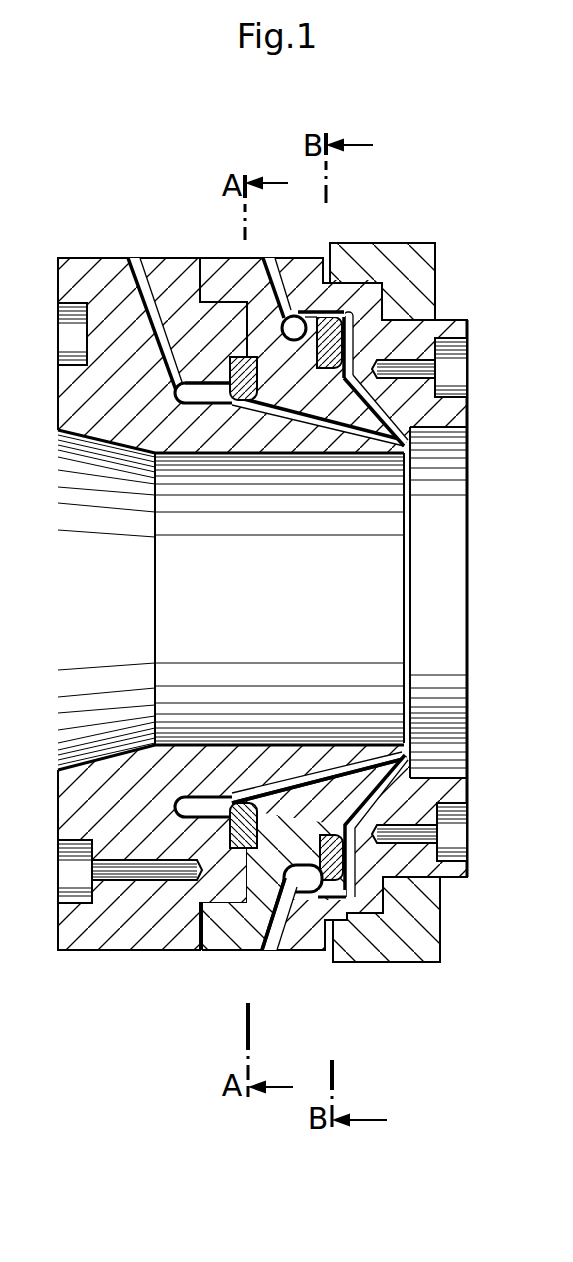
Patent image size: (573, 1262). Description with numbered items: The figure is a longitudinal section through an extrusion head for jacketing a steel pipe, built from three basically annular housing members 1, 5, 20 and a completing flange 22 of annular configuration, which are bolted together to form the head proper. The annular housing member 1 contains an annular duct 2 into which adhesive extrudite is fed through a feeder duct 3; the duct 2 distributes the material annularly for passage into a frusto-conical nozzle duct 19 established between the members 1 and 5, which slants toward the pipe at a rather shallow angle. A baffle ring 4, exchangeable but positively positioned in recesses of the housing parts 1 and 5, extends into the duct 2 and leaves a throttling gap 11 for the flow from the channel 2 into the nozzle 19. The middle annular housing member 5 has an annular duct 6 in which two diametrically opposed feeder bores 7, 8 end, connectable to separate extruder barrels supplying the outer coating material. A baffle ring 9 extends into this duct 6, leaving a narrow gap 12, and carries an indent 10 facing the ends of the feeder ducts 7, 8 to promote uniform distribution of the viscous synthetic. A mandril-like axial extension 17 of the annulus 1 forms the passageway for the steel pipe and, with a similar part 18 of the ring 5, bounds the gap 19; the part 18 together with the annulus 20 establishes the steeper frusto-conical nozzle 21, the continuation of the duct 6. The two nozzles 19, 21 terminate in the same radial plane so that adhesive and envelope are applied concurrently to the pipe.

The annular housing member 1 is at (108, 925).
The annular duct 2 is at (178, 395).
The feeder duct 3 is at (128, 258).
The baffle ring 4 is at (232, 386).
The annular housing member 5 is at (245, 938).
The annular duct 6 is at (304, 262).
The feeder bore 7 is at (272, 940).
The feeder bore 8 is at (276, 258).
The baffle ring 9 is at (382, 312).
The indent 10 is at (250, 258).
The throttling gap 11 is at (241, 402).
The gap 12 is at (346, 312).
The axial extension 17 is at (258, 772).
The part of ring 5 18 is at (346, 412).
The frusto-conical nozzle duct 19 is at (383, 447).
The annular housing member 20 is at (413, 337).
The frusto-conical nozzle 21 is at (455, 780).
The completing flange 22 is at (427, 940).